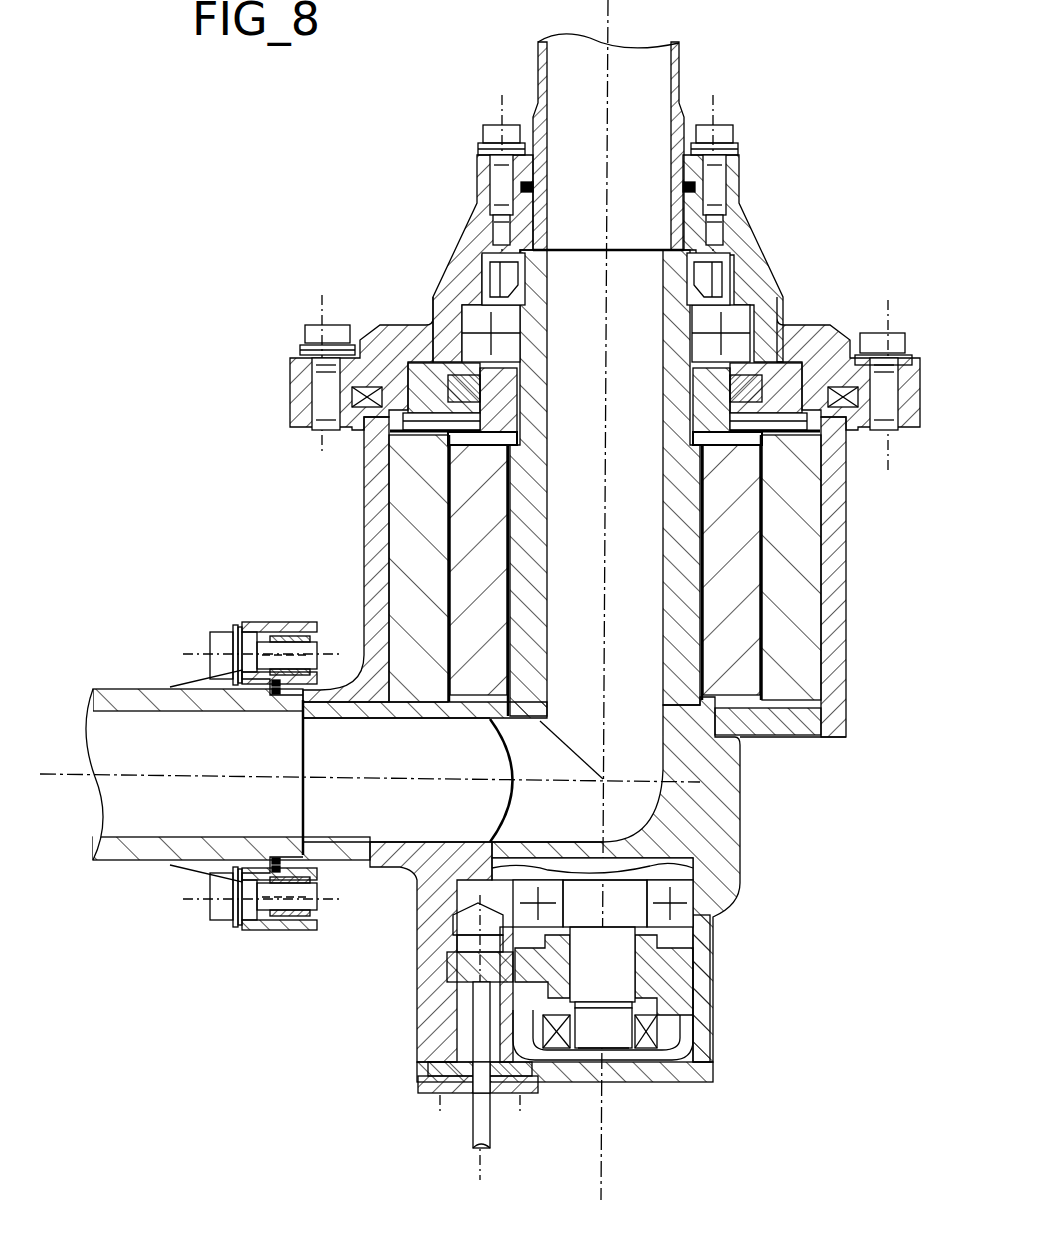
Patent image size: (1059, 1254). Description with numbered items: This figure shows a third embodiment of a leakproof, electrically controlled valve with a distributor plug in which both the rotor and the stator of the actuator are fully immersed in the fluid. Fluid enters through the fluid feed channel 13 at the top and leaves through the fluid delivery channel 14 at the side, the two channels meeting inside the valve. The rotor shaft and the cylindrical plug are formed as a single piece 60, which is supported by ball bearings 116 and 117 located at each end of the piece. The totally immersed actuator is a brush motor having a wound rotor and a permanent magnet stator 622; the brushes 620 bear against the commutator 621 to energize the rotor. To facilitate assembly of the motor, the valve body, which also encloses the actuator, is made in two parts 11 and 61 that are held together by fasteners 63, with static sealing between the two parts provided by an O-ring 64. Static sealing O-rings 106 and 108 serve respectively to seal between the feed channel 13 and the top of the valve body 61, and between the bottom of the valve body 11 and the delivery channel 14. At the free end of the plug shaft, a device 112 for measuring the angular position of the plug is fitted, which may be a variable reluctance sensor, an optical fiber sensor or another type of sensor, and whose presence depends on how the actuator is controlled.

The fluid feed channel 13 is at (675, 68).
The static sealing O-ring 106 is at (543, 188).
The valve body top part 61 is at (735, 235).
The ball bearing 117 is at (735, 325).
The brushes 620 is at (792, 325).
The fasteners 63 is at (315, 325).
The commutator 621 is at (500, 403).
The O-ring 64 is at (365, 410).
The valve body 11 is at (365, 555).
The fluid delivery channel 14 is at (133, 697).
The static sealing O-ring 108 is at (265, 697).
The permanent magnet stator 622 is at (796, 683).
The single piece rotor shaft and cylindrical plug 60 is at (705, 830).
The ball bearing 116 is at (680, 920).
The angular position measuring device 112 is at (475, 1115).